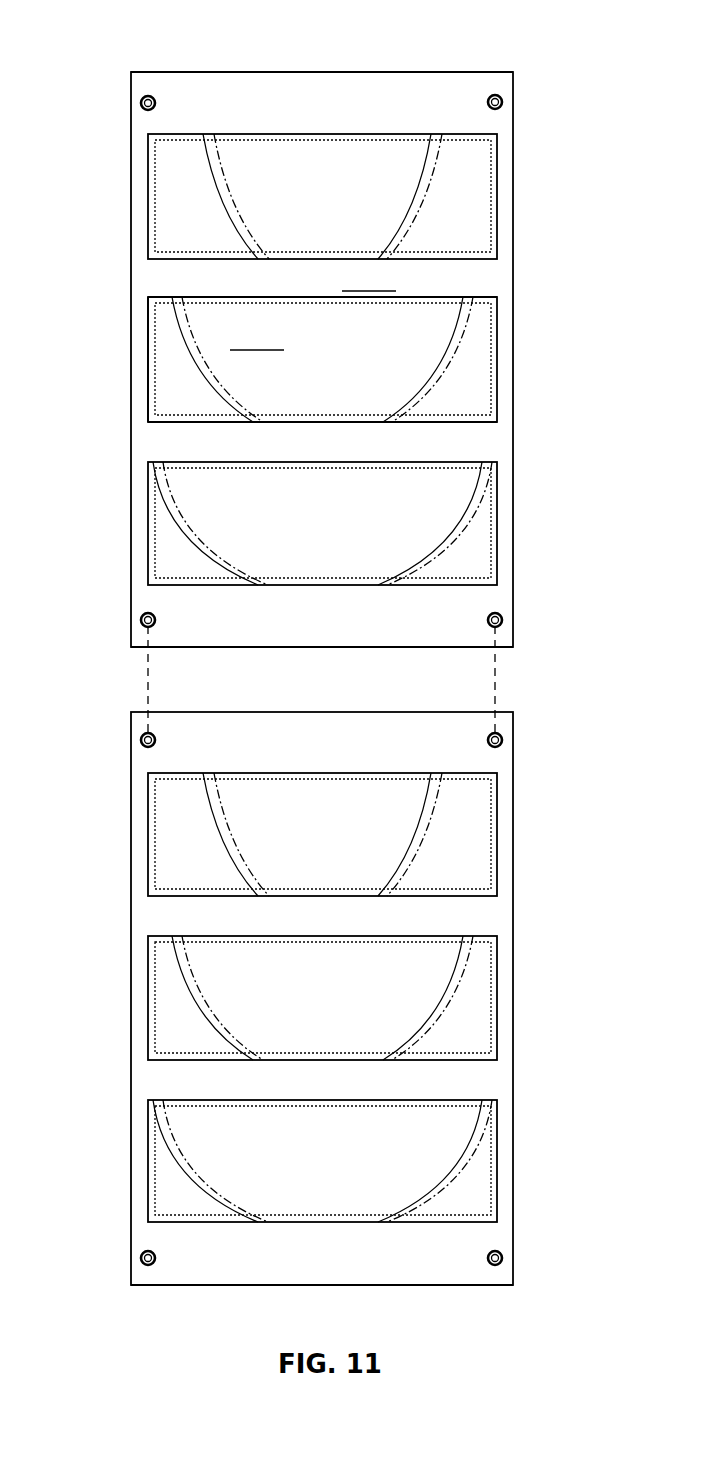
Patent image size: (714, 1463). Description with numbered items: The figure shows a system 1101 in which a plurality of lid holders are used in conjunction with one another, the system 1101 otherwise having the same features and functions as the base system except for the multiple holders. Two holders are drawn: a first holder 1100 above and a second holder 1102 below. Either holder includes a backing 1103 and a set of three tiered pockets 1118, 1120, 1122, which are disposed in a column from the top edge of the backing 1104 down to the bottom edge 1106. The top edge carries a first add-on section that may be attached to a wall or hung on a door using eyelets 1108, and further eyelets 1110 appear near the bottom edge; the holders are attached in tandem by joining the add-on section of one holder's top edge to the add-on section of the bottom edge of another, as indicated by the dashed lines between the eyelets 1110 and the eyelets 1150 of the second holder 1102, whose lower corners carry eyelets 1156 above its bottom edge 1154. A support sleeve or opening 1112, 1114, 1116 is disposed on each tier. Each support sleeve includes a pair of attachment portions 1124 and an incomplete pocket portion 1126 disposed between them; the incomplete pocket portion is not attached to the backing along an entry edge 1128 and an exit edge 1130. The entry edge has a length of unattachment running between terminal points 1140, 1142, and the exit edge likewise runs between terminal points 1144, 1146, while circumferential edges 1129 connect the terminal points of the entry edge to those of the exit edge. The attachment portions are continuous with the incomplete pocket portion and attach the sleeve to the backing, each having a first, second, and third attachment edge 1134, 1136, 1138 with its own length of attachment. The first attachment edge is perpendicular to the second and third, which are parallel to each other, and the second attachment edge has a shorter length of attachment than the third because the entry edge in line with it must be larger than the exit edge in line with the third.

The system 1101 is at (156, 36).
The first holder 1100 is at (515, 268).
The second holder 1102 is at (514, 1007).
The backing 1103 is at (369, 280).
The top edge of the backing 1104 is at (350, 90).
The bottom edge 1106 is at (300, 627).
The eyelets 1108 is at (504, 100).
The mounting hole 1110 is at (504, 620).
The support sleeve or opening 1112 is at (470, 180).
The support sleeve or opening 1114 is at (478, 332).
The support sleeve or opening 1116 is at (483, 518).
The first tiered pocket 1118 is at (505, 223).
The second tiered pocket 1120 is at (507, 421).
The third tiered pocket 1122 is at (498, 592).
The attachment portions 1124 is at (480, 365).
The incomplete pocket portion 1126 is at (257, 339).
The entry edge 1128 is at (302, 297).
The circumferential edges 1129 is at (420, 391).
The exit edge 1130 is at (310, 420).
The first attachment edge 1134 is at (148, 360).
The second attachment edge 1136 is at (232, 297).
The third attachment edge 1138 is at (228, 422).
The terminal point 1140 is at (175, 520).
The terminal point 1142 is at (480, 462).
The terminal point 1144 is at (258, 585).
The terminal point 1146 is at (385, 585).
The mounting hole 1150 is at (503, 740).
The bottom edge of second panel 1154 is at (197, 1270).
The mounting hole 1156 is at (503, 1257).